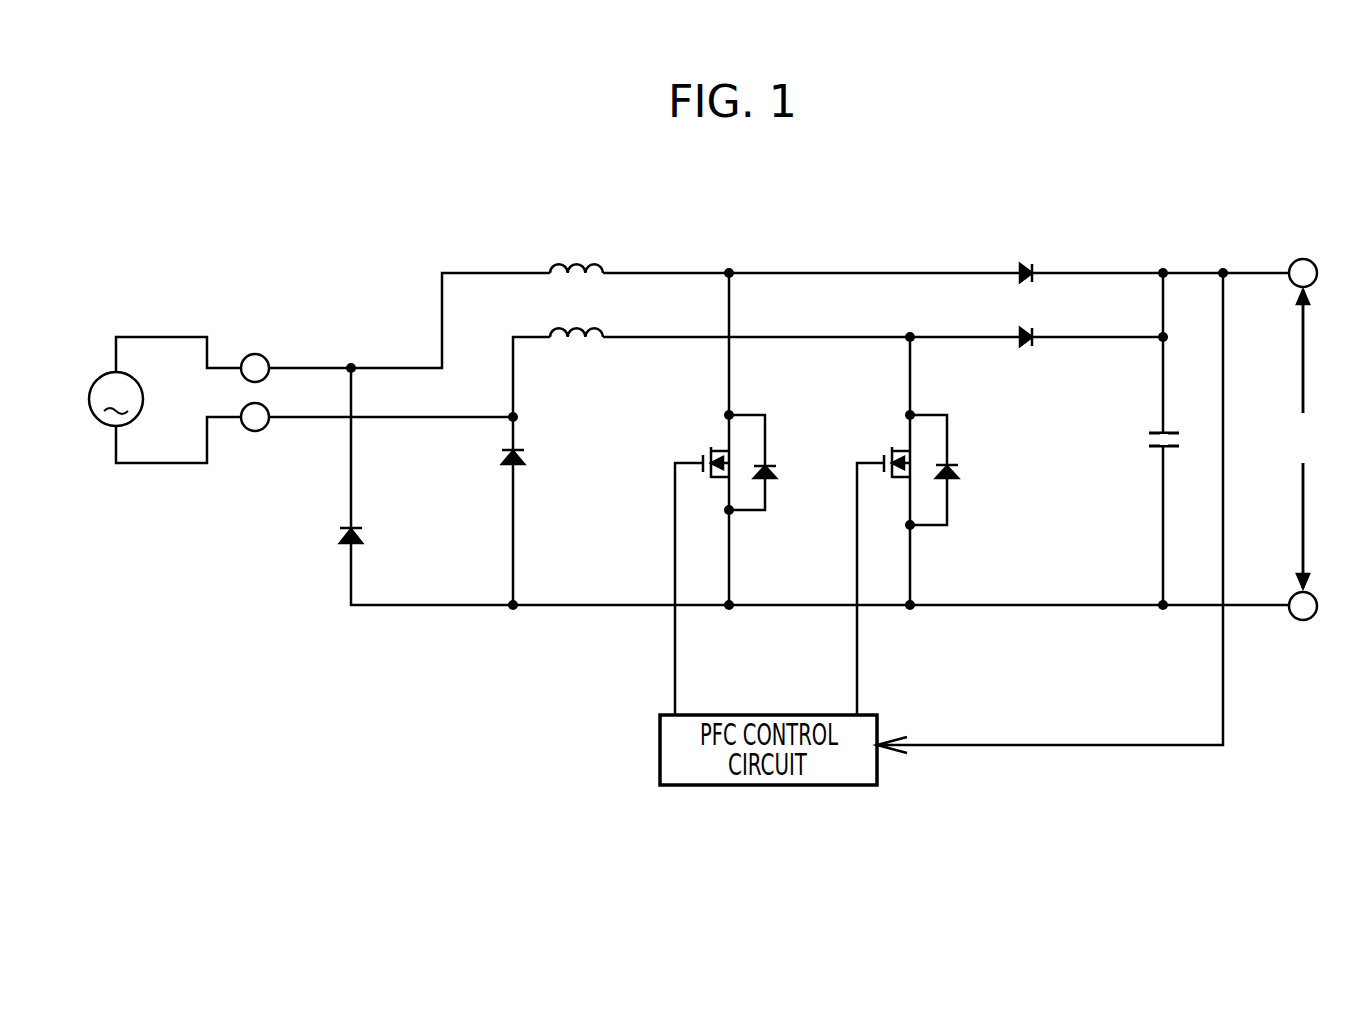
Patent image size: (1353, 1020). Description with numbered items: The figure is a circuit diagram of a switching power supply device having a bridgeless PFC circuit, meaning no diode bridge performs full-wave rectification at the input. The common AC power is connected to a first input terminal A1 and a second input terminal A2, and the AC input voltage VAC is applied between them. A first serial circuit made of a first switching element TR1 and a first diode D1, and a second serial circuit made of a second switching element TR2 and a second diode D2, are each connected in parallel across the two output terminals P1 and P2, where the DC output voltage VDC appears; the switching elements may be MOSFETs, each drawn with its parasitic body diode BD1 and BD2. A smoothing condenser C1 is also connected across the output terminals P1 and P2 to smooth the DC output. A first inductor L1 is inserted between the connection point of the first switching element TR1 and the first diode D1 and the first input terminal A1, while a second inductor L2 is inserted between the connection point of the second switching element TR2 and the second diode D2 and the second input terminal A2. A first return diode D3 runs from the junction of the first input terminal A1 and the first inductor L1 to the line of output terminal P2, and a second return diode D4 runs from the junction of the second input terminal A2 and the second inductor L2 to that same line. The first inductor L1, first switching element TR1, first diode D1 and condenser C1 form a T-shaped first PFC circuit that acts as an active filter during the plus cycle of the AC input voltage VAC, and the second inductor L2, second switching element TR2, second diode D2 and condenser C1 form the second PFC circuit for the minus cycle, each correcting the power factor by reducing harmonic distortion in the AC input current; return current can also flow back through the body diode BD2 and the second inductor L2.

The AC input voltage VAC is at (96, 382).
The first input terminal A1 is at (254, 344).
The second input terminal A2 is at (254, 436).
The first inductor L1 is at (576, 243).
The second inductor L2 is at (576, 362).
The first diode D1 is at (1030, 250).
The second diode D2 is at (1030, 362).
The first return diode D3 is at (330, 537).
The second return diode D4 is at (490, 456).
The first switching element TR1 is at (693, 443).
The second switching element TR2 is at (873, 443).
The body diode BD1 is at (777, 466).
The body diode BD2 is at (962, 470).
The condenser C1 is at (1143, 444).
The output terminal P1 is at (1302, 251).
The output terminal P2 is at (1303, 628).
The DC output voltage VDC is at (1305, 439).